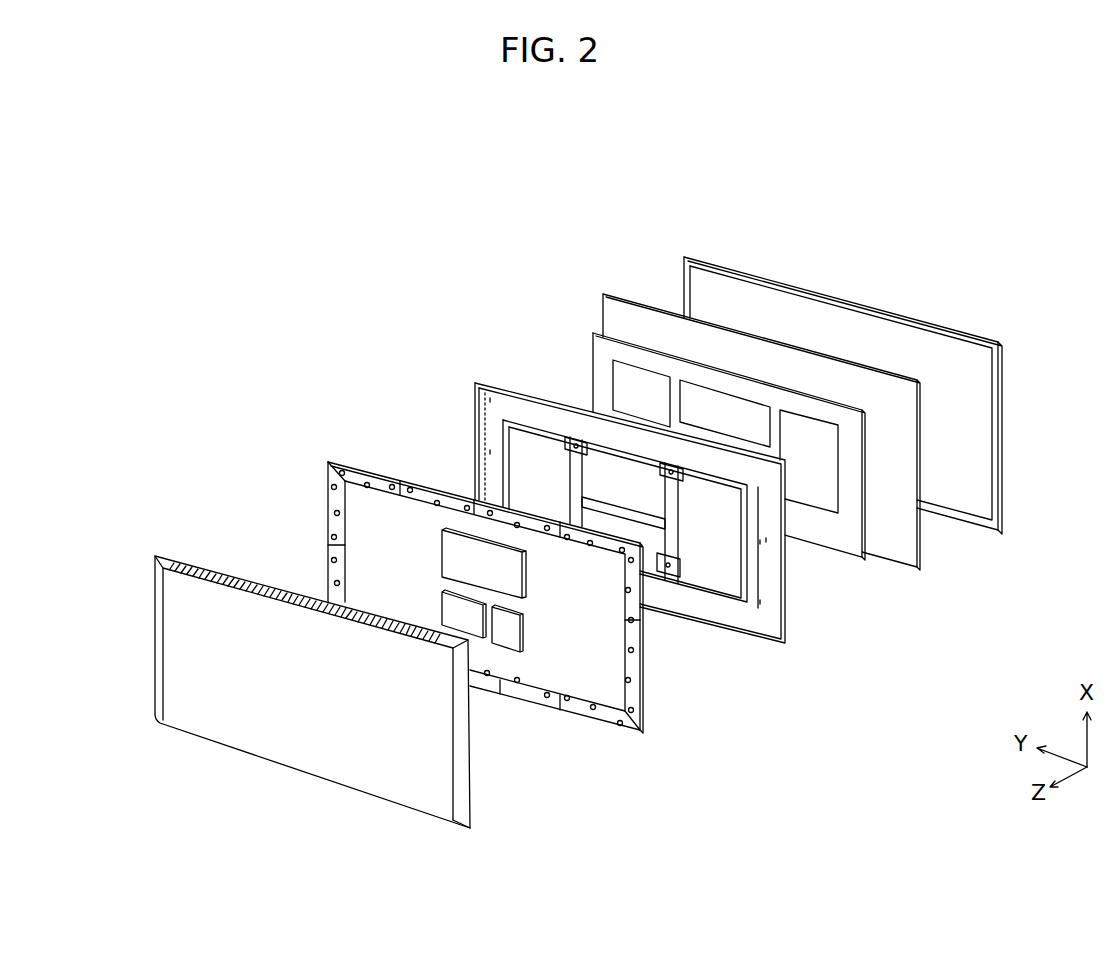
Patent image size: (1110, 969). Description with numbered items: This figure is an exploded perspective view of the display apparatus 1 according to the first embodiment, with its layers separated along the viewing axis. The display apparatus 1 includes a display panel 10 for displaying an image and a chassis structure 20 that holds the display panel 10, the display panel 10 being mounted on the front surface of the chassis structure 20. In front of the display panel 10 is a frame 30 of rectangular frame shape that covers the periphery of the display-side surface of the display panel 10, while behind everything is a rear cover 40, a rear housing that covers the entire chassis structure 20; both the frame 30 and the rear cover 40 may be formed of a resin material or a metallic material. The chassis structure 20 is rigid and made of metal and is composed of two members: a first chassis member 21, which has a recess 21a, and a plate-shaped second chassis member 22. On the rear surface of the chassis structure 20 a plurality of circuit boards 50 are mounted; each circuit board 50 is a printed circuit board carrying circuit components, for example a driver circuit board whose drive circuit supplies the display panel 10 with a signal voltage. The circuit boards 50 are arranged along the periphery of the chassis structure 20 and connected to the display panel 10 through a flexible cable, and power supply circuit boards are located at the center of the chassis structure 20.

The display apparatus 1 is at (943, 278).
The display panel 10 is at (630, 308).
The chassis structure 20 is at (534, 280).
The first chassis member 21 is at (485, 378).
The recess 21a is at (493, 411).
The second chassis member 22 is at (597, 350).
The frame 30 is at (750, 268).
The rear cover 40 is at (163, 557).
The circuit board 50 is at (372, 466).